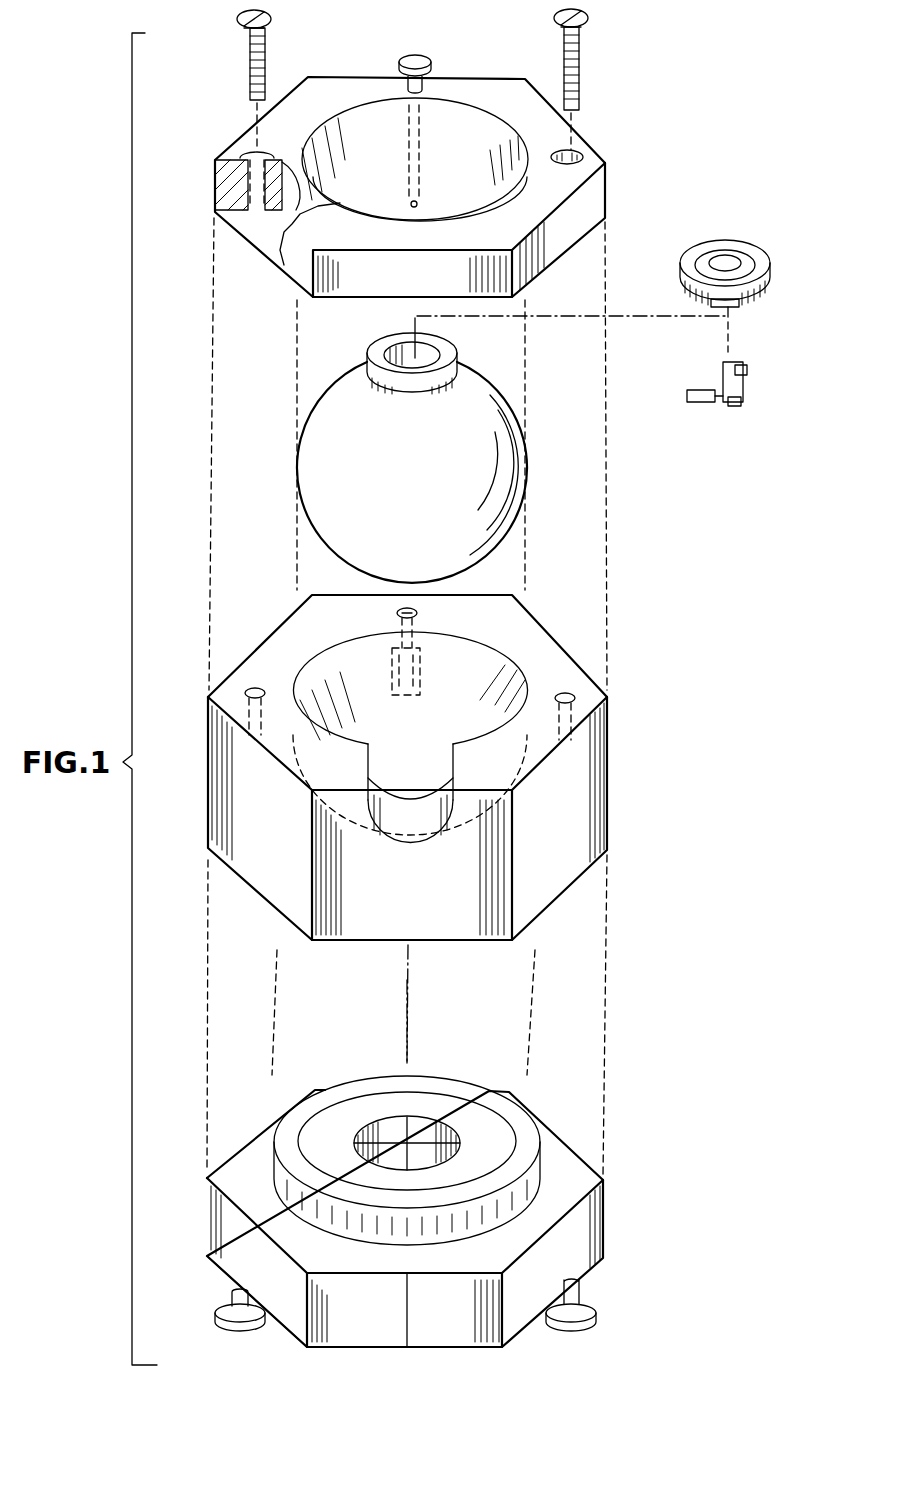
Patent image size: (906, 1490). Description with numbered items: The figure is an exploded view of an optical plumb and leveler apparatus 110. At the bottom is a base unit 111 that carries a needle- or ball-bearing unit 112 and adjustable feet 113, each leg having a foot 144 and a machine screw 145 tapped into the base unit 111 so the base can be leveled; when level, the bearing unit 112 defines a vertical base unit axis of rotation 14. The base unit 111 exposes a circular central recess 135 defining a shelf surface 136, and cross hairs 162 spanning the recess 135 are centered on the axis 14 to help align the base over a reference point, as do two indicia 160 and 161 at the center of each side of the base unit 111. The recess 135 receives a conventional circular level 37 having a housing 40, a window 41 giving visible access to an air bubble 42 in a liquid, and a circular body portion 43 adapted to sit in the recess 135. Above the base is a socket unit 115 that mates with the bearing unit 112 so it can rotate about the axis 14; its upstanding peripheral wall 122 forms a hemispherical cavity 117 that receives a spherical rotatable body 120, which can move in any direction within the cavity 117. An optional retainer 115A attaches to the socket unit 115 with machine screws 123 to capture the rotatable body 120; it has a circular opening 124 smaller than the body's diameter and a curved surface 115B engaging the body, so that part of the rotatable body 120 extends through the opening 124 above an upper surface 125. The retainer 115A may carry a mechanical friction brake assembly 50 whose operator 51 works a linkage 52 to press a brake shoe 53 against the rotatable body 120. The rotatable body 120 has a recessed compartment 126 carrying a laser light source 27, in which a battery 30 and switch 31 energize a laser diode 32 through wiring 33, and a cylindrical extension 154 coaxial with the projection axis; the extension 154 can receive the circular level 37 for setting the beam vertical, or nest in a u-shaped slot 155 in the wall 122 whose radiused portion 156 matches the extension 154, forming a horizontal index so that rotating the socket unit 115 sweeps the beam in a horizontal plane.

The optical plumb and leveler apparatus 110 is at (642, 640).
The base unit 111 is at (400, 1238).
The bearing unit 112 is at (274, 1156).
The adjustable feet 113 is at (407, 1305).
The socket unit 115 is at (437, 766).
The retainer 115A is at (232, 157).
The curved surface 115B is at (457, 160).
The hemispherical cavity 117 is at (317, 677).
The rotatable body 120 is at (522, 507).
The upstanding peripheral wall 122 is at (553, 643).
The machine screws 123 is at (270, 13).
The circular opening 124 is at (473, 122).
The upper surface 125 is at (587, 150).
The recessed compartment 126 is at (392, 347).
The circular central recess 135 is at (388, 1118).
The shelf surface 136 is at (357, 1101).
The base unit axis of rotation 14 is at (410, 1022).
The foot 144 is at (216, 1313).
The machine screw 145 is at (232, 1295).
The cylindrical extension 154 is at (413, 352).
The u-shaped slot 155 is at (394, 760).
The radiused portion 156 is at (416, 846).
The indicia 160 is at (410, 1328).
The indicia 161 is at (257, 1253).
The cross hairs 162 is at (422, 1130).
The laser light source 27 is at (721, 392).
The battery 30 is at (700, 405).
The switch 31 is at (738, 410).
The laser diode 32 is at (747, 370).
The wiring 33 is at (745, 388).
The circular level 37 is at (728, 265).
The housing 40 is at (712, 243).
The window 41 is at (743, 255).
The air bubble 42 is at (710, 262).
The circular body portion 43 is at (740, 302).
The mechanical friction brake assembly 50 is at (392, 51).
The operator 51 is at (413, 58).
The linkage 52 is at (408, 187).
The brake shoe 53 is at (405, 190).